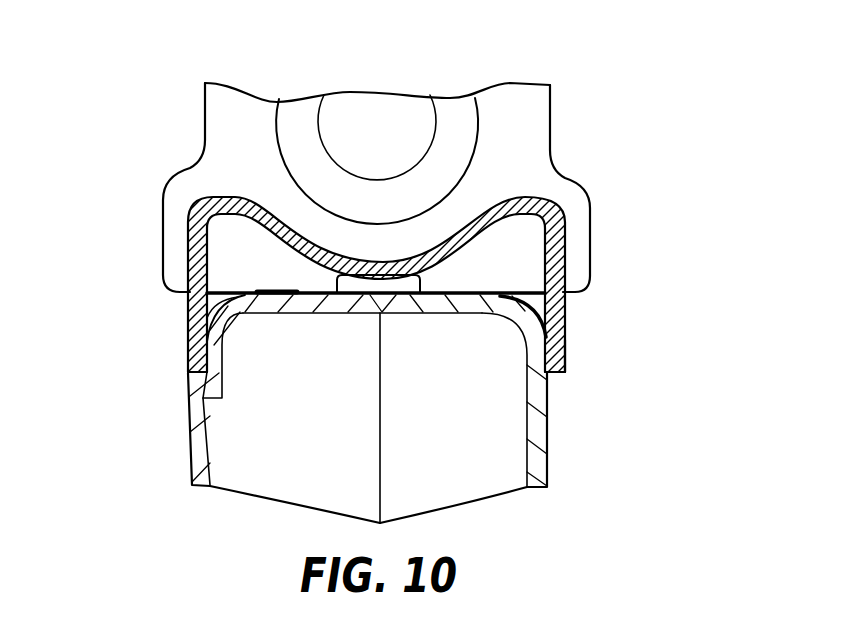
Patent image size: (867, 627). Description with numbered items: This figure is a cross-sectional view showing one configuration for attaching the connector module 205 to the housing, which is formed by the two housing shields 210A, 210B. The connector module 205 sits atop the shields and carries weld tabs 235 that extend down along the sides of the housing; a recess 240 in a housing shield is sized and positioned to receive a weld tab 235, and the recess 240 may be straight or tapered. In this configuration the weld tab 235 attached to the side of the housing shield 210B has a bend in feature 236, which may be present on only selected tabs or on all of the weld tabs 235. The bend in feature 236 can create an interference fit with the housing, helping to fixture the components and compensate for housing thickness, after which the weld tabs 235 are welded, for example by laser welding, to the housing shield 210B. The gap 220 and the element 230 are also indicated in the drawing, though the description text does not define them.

The connector module 205 is at (203, 138).
The housing shield 210A is at (187, 450).
The housing shield 210B is at (550, 458).
The gap 220 is at (187, 379).
The seal 230 is at (187, 217).
The weld tab 235 is at (567, 305).
The bend in feature 236 is at (566, 358).
The recess 240 is at (226, 352).